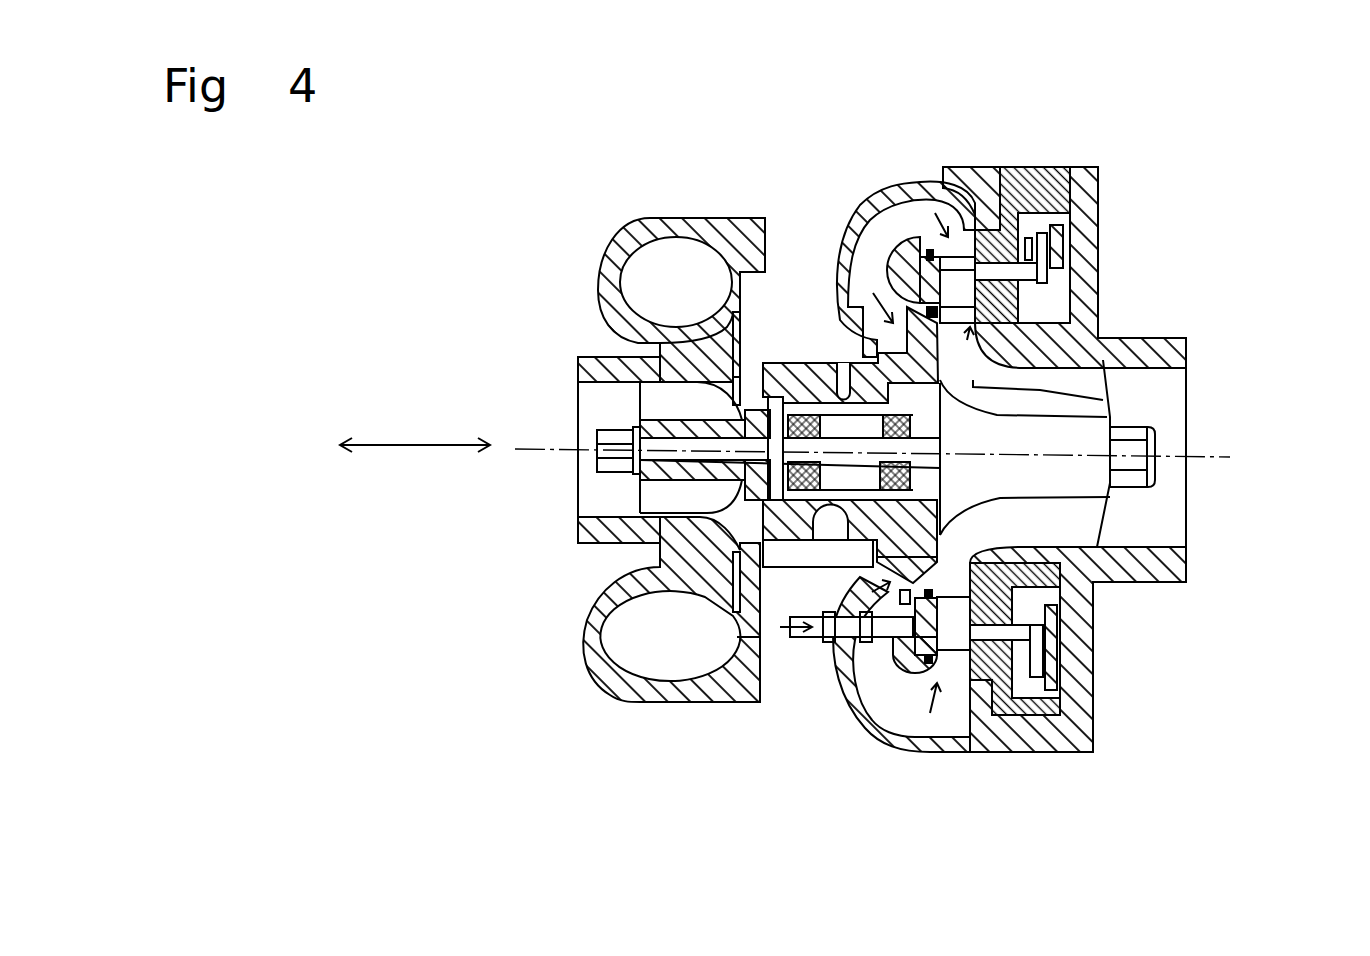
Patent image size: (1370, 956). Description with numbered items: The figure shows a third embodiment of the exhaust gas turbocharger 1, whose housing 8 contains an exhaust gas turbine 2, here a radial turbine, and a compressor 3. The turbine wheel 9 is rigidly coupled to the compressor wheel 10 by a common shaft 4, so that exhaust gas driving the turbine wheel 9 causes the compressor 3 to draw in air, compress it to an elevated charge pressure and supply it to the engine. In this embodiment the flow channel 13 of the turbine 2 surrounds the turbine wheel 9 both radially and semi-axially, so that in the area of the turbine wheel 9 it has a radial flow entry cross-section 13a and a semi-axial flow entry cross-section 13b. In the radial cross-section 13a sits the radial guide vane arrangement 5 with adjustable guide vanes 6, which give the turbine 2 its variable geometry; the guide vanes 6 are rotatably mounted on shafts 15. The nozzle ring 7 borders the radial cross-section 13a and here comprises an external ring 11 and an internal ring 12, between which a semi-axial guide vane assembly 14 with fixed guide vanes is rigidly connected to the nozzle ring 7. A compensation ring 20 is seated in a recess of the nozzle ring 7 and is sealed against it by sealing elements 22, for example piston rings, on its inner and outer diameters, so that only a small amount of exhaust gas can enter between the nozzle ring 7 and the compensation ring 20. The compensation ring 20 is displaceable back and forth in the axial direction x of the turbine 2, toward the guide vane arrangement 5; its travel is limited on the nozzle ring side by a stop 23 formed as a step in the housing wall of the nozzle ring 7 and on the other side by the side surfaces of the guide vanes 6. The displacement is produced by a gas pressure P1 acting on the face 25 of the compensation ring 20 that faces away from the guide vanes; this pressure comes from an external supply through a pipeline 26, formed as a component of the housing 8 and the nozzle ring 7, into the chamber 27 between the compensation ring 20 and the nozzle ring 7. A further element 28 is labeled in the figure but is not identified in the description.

The exhaust gas turbocharger 1 is at (465, 764).
The exhaust gas turbine 2 is at (1116, 516).
The compressor 3 is at (576, 296).
The common shaft 4 is at (810, 450).
The radial guide vane arrangement 5 is at (1103, 400).
The adjustable guide vanes 6 is at (955, 263).
The nozzle ring 7 is at (900, 258).
The housing 8 is at (620, 243).
The turbine wheel 9 is at (1141, 453).
The compressor wheel 10 is at (698, 433).
The external ring 11 is at (947, 583).
The internal ring 12 is at (935, 558).
The flow channel 13 is at (898, 720).
The radial flow entry cross-section 13a is at (937, 172).
The semi-axial flow entry cross-section 13b is at (875, 307).
The semi-axial guide vane assembly 14 is at (980, 565).
The shafts 15 is at (985, 665).
The compensation ring 20 is at (915, 262).
The sealing element 22 is at (930, 256).
The stop 23 is at (918, 660).
The face 25 is at (905, 283).
The pipeline 26 is at (810, 637).
The chamber 27 is at (905, 640).
The ring 28 is at (895, 625).
The gas pressure P1 is at (783, 627).
The axial direction x is at (415, 464).